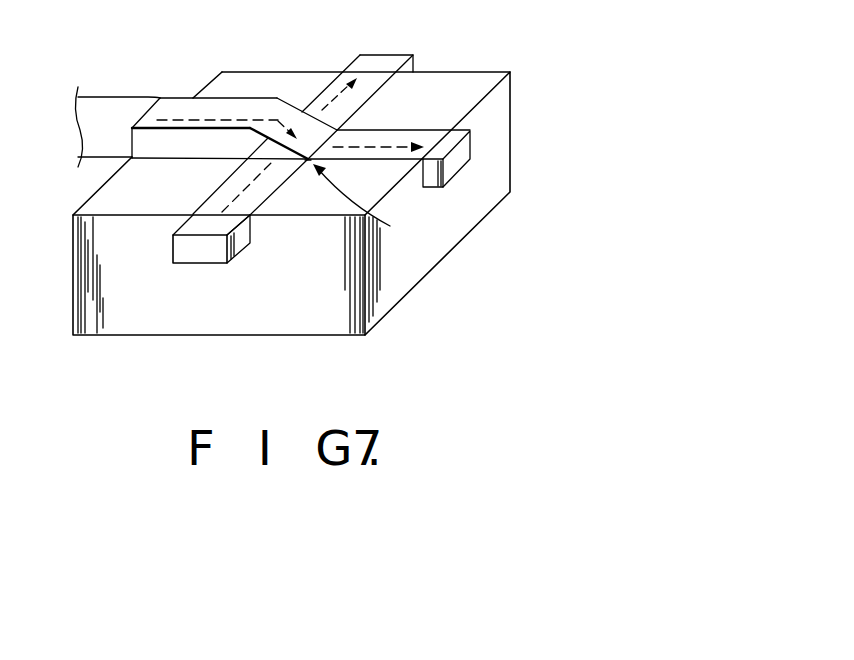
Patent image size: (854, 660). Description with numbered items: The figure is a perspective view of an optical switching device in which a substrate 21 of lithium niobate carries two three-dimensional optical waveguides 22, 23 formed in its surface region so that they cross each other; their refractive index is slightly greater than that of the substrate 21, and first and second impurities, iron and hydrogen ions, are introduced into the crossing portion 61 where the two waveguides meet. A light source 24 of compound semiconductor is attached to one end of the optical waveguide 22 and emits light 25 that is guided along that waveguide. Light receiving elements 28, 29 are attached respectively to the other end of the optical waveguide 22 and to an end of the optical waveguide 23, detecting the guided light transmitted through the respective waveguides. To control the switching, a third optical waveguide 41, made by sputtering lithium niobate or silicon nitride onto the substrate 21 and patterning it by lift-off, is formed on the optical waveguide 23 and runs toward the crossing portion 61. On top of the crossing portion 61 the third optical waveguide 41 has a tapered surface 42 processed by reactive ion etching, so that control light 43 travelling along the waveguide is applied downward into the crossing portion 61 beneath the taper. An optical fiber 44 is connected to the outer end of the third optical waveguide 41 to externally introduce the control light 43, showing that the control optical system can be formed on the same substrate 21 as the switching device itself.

The substrate 21 is at (117, 326).
The optical waveguide 22 is at (281, 177).
The optical waveguide 23 is at (403, 132).
The light source 24 is at (200, 256).
The light 25 is at (233, 197).
The light receiving element 28 is at (379, 60).
The light receiving element 29 is at (455, 170).
The third optical waveguide 41 is at (182, 103).
The tapered surface 42 is at (296, 112).
The control light 43 is at (241, 118).
The optical fiber 44 is at (117, 108).
The crossing portion 61 is at (369, 209).